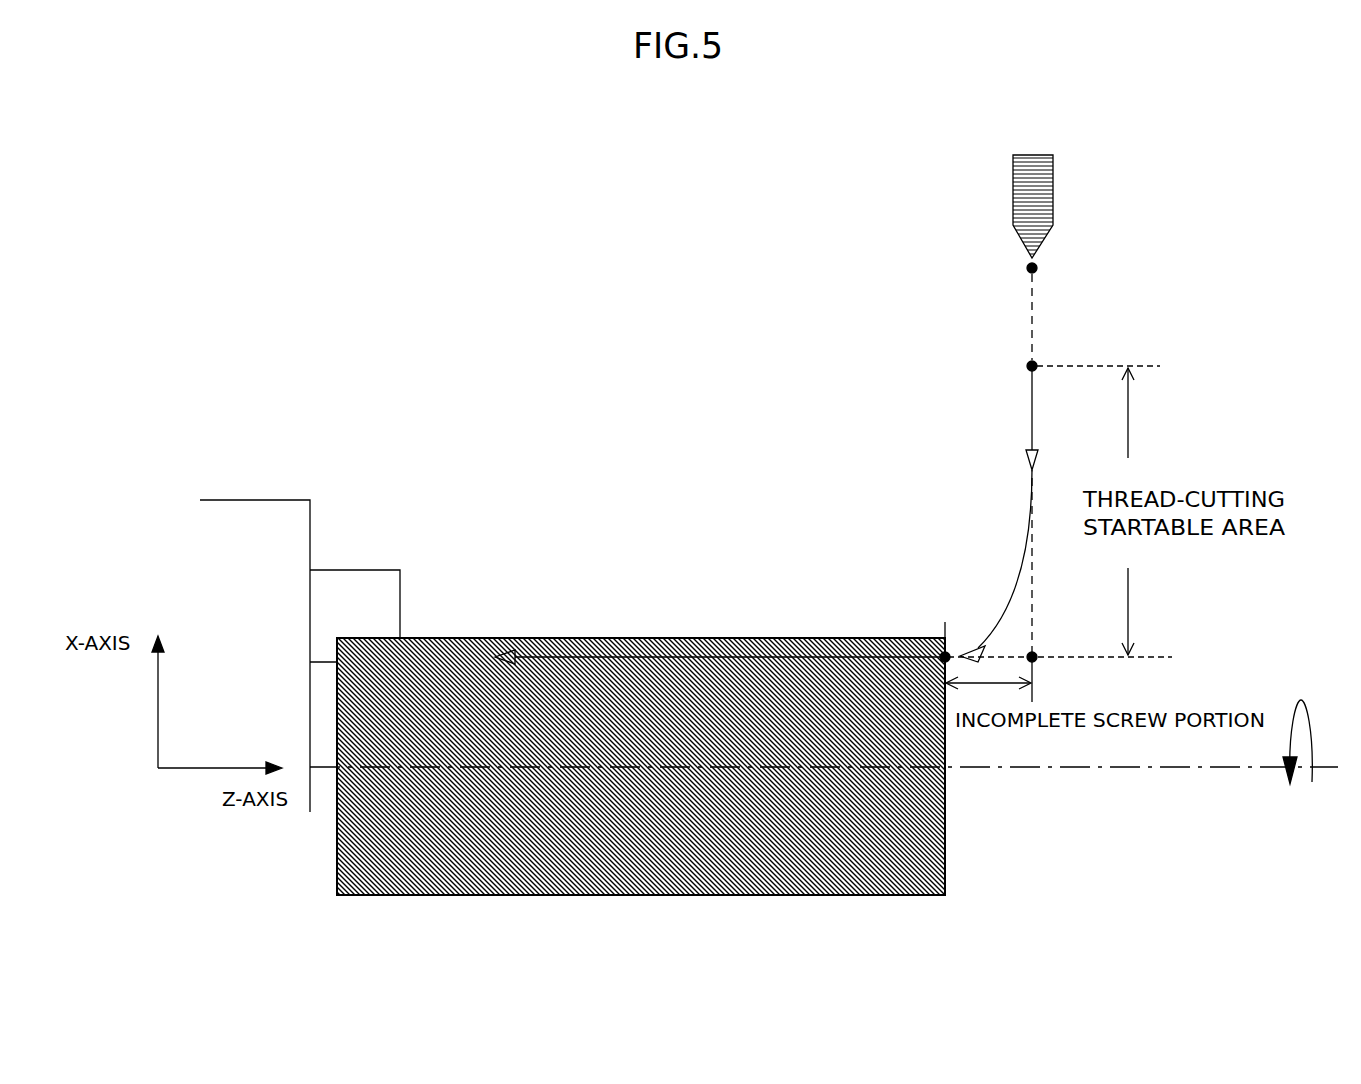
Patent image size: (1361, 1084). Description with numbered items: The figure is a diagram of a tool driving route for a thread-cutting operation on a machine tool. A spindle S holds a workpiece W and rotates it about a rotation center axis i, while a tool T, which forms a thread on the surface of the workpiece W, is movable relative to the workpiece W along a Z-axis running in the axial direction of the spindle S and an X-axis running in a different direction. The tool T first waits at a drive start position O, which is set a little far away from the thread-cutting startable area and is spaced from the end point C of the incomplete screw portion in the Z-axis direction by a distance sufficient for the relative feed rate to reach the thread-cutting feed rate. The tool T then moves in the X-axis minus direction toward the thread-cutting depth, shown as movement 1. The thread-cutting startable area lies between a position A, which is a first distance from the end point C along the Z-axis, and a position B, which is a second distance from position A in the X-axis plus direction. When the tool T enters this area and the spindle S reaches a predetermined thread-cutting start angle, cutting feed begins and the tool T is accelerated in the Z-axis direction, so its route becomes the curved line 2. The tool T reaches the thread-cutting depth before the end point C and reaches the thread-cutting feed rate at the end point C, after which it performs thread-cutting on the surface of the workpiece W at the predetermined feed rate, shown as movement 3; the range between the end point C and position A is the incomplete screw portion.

The tool T is at (1044, 214).
The spindle S is at (296, 514).
The workpiece W is at (437, 895).
The rotation center axis i is at (1180, 770).
The drive start position O is at (1017, 269).
The position B is at (1078, 367).
The position A is at (1045, 677).
The end point of the incomplete screw portion C is at (934, 657).
The movement in the X-axis minus direction 1 is at (1045, 511).
The curved movement route 2 is at (1060, 566).
The thread-cutting 3 is at (717, 638).